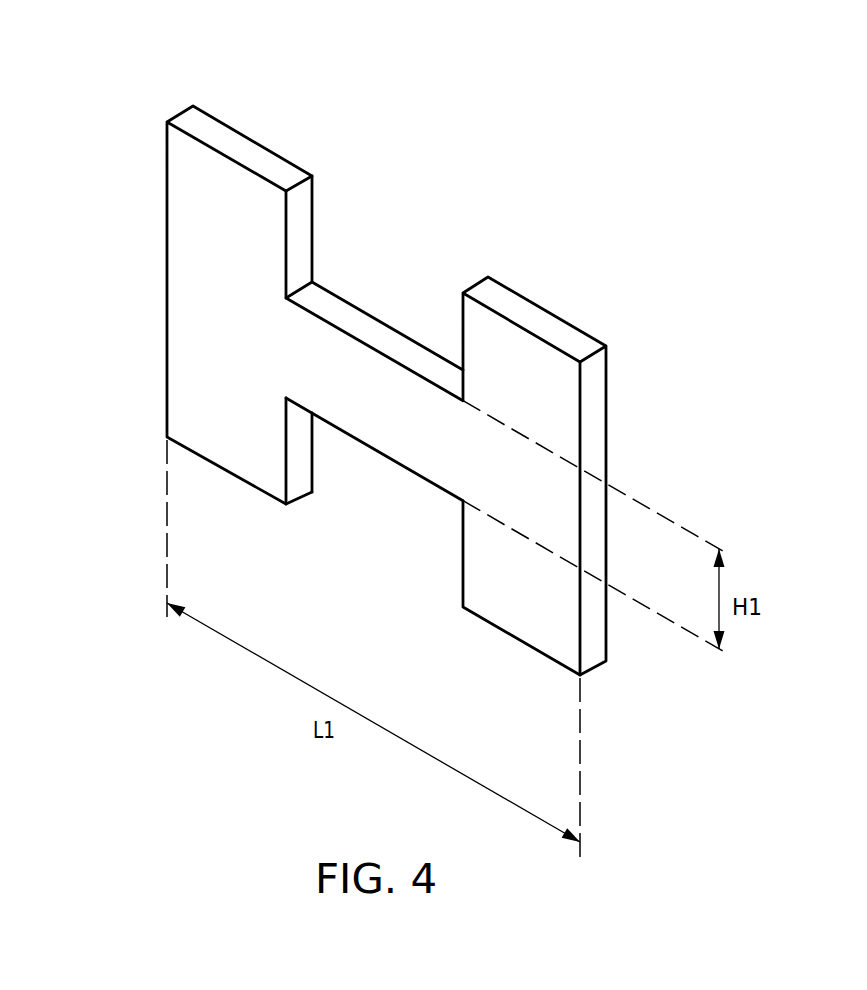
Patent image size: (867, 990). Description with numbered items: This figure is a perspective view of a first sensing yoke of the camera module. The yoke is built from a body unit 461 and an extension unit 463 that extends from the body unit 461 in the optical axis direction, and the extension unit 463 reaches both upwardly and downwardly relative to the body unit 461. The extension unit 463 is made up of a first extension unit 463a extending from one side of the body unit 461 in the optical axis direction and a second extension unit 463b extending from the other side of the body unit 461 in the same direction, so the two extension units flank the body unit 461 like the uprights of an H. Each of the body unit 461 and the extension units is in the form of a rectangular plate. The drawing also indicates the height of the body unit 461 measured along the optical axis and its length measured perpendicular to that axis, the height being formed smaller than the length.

The body unit 461 is at (347, 380).
The extension unit 463 is at (591, 181).
The first extension unit 463a is at (233, 207).
The second extension unit 463b is at (523, 357).